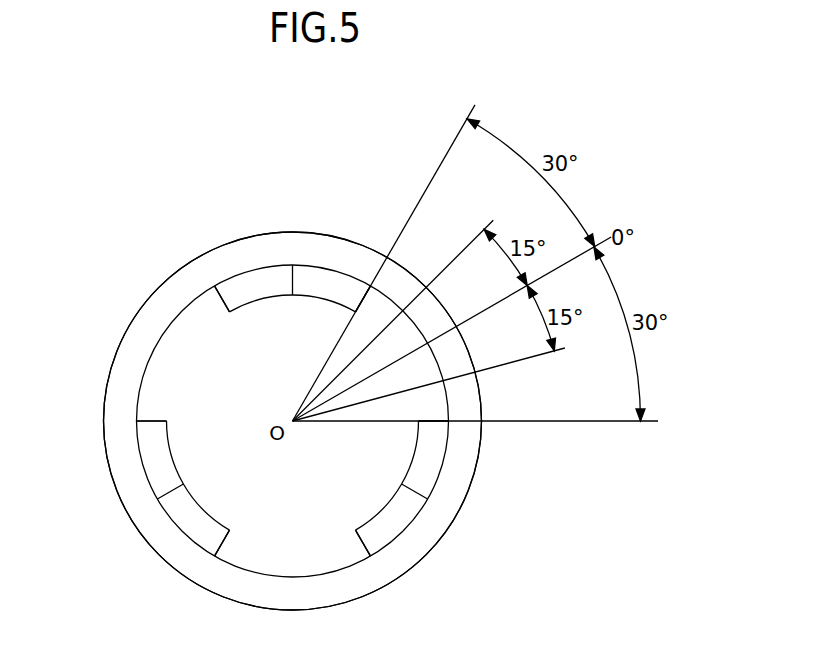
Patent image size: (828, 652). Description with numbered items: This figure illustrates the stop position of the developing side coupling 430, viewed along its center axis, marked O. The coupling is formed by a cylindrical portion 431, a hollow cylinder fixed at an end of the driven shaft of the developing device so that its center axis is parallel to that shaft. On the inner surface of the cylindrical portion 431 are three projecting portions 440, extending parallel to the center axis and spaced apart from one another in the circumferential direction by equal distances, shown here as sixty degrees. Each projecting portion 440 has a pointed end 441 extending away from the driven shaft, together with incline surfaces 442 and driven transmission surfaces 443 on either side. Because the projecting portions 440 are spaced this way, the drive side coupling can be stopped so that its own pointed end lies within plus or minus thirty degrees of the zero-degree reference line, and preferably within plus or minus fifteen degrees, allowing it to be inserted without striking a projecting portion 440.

The developing side coupling 430 is at (60, 173).
The cylindrical portion 431 is at (142, 307).
The projecting portion 440 is at (265, 303).
The pointed end 441 is at (290, 278).
The incline surface 442 is at (243, 287).
The driven transmission surface 443 is at (213, 300).